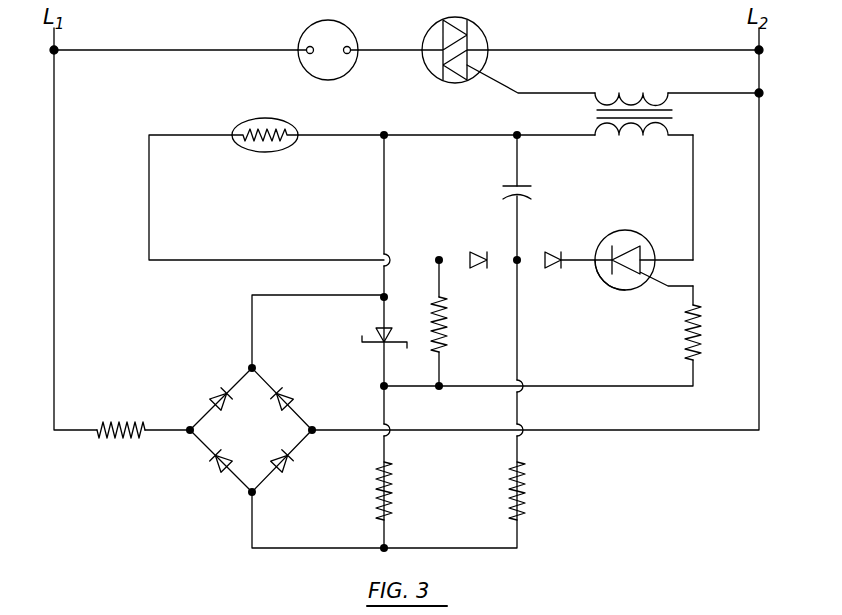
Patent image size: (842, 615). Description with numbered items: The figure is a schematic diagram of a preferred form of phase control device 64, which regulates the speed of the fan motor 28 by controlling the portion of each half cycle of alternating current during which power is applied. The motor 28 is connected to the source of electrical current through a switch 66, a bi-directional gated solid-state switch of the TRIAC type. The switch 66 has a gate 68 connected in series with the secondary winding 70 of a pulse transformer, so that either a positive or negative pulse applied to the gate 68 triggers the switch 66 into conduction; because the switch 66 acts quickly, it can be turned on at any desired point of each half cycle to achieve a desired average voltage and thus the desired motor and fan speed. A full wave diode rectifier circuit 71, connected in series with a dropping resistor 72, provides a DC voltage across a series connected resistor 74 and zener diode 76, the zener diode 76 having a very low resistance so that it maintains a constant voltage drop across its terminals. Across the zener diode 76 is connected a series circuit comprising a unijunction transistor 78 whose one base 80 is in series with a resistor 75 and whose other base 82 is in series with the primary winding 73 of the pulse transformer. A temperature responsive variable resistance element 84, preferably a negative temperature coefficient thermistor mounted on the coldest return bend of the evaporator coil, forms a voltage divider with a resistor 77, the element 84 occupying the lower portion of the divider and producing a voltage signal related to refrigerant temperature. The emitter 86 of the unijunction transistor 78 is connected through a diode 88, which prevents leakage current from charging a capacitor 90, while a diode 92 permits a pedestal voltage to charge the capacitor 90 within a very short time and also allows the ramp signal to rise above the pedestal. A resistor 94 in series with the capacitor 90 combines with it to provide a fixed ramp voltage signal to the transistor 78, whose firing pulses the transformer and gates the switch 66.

The motor 28 is at (305, 28).
The switch 66 is at (483, 27).
The gate 68 is at (497, 85).
The secondary winding 70 is at (604, 84).
The primary winding 73 is at (607, 142).
The temperature responsive variable resistance element 84 is at (258, 118).
The capacitor 90 is at (505, 184).
The diode 92 is at (478, 250).
The diode 88 is at (553, 250).
The base 82 is at (608, 263).
The emitter 86 is at (608, 270).
The unijunction transistor 78 is at (617, 292).
The base 80 is at (642, 275).
The resistor 77 is at (447, 320).
The zener diode 76 is at (374, 335).
The resistor 75 is at (700, 330).
The dropping resistor 72 is at (118, 420).
The phase control device 64 is at (190, 458).
The full wave diode rectifier circuit 71 is at (214, 499).
The resistor 74 is at (393, 480).
The resistor 94 is at (525, 480).